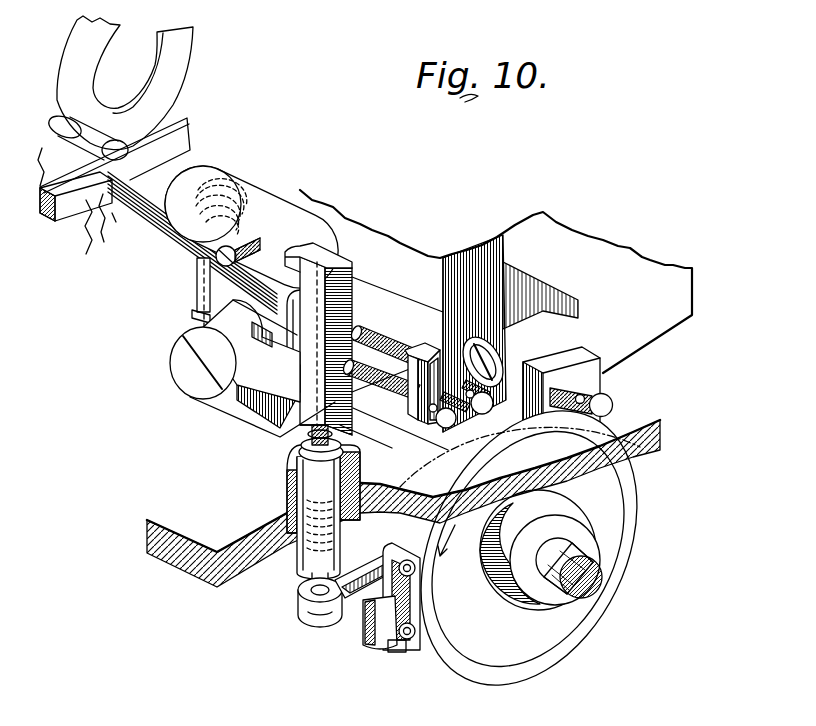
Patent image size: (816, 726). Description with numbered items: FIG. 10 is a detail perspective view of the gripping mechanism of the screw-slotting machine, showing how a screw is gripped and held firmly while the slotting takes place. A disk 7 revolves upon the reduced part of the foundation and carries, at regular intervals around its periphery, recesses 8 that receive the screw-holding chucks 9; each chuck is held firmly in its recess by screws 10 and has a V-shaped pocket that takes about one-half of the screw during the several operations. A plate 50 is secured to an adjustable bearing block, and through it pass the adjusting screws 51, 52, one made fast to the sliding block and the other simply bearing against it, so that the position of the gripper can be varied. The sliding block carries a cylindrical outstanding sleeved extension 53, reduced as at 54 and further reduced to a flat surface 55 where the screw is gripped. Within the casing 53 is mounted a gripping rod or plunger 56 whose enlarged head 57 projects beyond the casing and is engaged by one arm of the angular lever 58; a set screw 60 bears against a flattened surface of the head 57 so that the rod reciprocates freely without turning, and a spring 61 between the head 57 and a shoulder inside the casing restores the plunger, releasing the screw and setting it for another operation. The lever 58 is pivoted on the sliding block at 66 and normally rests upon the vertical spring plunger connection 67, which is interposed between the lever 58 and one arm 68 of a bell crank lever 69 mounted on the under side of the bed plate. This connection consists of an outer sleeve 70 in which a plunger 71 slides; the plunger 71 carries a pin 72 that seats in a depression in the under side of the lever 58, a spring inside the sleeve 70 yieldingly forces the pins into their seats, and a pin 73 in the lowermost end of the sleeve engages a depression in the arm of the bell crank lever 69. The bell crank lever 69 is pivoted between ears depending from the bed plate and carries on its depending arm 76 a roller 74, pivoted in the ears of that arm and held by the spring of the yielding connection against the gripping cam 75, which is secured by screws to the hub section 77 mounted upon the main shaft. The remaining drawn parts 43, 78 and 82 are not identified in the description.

The disk 7 is at (173, 114).
The recesses 8 is at (92, 205).
The screw-holding chucks 9 is at (97, 140).
The screws 10 is at (60, 125).
The frame body 43 is at (496, 320).
The plate 50 is at (418, 355).
The adjusting screw 51 is at (421, 440).
The adjusting screw 52 is at (566, 395).
The cylindrical sleeved extension 53 is at (298, 232).
The reduced portion 54 is at (148, 212).
The flat surface 55 is at (116, 200).
The gripping rod or plunger 56 is at (187, 197).
The enlarged head 57 is at (330, 234).
The angular lever 58 is at (262, 405).
The set screw 60 is at (212, 263).
The spring 61 is at (240, 207).
The pivot 66 is at (197, 387).
The vertical spring plunger connection 67 is at (310, 532).
The arm 68 is at (325, 620).
The bell crank lever 69 is at (378, 644).
The outer sleeve 70 is at (313, 487).
The plunger 71 is at (300, 447).
The pin 72 is at (336, 436).
The pin 73 is at (300, 591).
The roller 74 is at (398, 653).
The gripping cam 75 is at (473, 667).
The arm 76 is at (419, 590).
The hub section 77 is at (529, 597).
The pin 78 is at (222, 287).
The shaft 82 is at (597, 578).